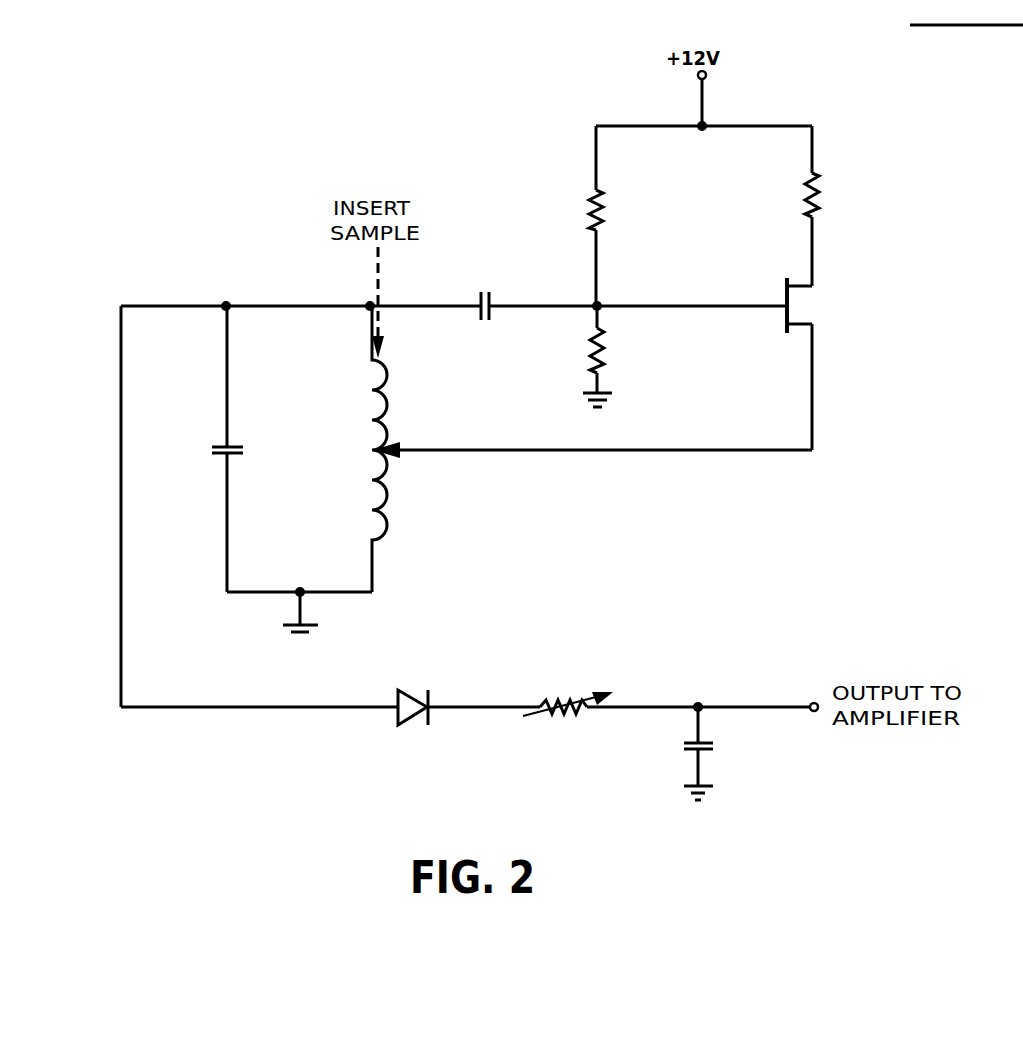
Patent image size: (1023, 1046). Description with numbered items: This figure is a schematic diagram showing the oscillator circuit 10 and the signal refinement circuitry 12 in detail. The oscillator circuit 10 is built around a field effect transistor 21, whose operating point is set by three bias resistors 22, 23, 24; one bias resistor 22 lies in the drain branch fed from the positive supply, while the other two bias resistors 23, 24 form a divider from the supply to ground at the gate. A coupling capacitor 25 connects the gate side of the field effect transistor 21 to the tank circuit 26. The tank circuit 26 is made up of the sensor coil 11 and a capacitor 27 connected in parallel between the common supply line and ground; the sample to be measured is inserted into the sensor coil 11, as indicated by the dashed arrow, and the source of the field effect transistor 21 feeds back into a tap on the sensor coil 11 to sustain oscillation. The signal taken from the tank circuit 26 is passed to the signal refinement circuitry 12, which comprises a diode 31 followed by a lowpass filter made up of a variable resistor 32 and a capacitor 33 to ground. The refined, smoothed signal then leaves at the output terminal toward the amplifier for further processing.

The oscillator circuit 10 is at (920, 248).
The sensor coil 11 is at (389, 499).
The signal refinement circuitry 12 is at (812, 568).
The field effect transistor 21 is at (783, 315).
The bias resistor 22 is at (808, 200).
The bias resistor 23 is at (592, 216).
The bias resistor 24 is at (590, 346).
The coupling capacitor 25 is at (490, 303).
The tank circuit 26 is at (296, 290).
The capacitor 27 is at (234, 460).
The diode 31 is at (398, 697).
The variable resistor 32 is at (546, 709).
The capacitor 33 is at (693, 751).